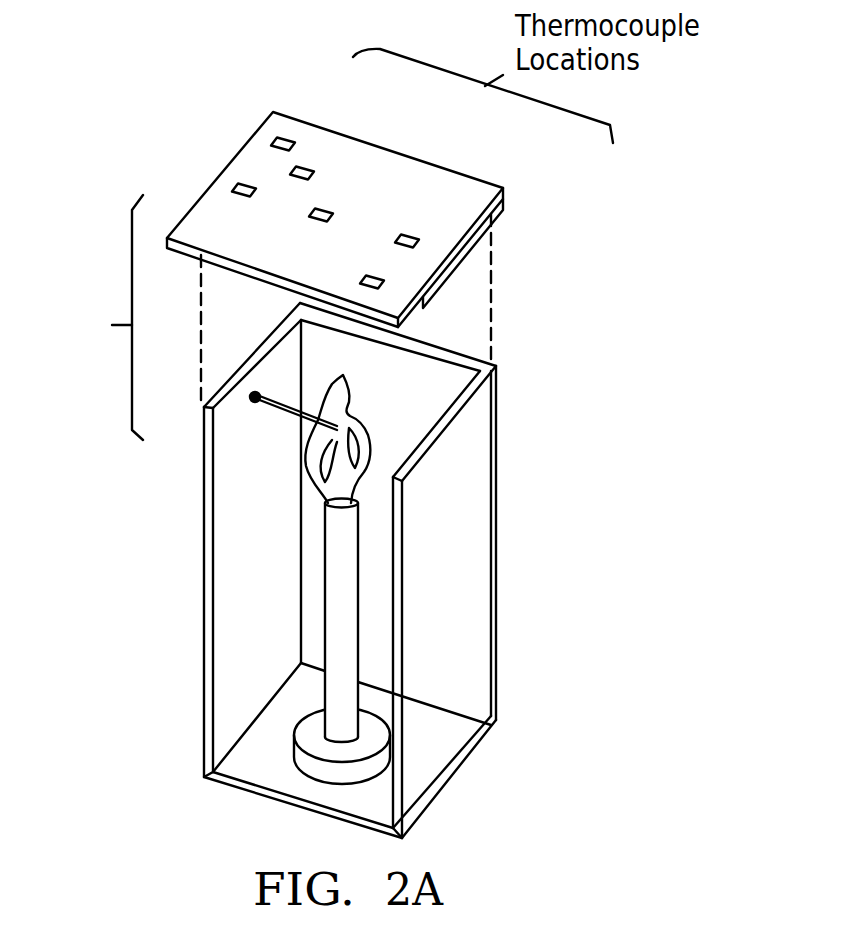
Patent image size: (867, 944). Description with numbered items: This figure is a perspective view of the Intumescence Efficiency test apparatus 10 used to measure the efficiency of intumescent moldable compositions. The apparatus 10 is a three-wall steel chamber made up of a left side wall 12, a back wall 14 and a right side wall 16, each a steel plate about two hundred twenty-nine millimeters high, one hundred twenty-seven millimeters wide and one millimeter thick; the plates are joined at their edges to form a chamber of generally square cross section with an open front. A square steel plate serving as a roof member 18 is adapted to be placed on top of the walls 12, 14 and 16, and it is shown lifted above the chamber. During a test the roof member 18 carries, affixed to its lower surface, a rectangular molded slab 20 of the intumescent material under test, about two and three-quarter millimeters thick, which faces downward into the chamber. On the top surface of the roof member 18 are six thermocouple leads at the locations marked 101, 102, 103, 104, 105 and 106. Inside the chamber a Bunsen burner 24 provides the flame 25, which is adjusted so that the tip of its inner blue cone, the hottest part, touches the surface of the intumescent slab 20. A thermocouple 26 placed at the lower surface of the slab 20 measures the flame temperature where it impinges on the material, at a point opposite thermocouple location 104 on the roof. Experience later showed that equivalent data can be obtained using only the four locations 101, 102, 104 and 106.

The apparatus 10 is at (536, 367).
The left side wall 12 is at (203, 522).
The back wall 14 is at (438, 383).
The right side wall 16 is at (470, 535).
The roof member 18 is at (213, 220).
The molded slab 20 is at (478, 242).
The Bunsen burner 24 is at (333, 608).
The flame 25 is at (333, 397).
The thermocouple 26 is at (340, 428).
The thermocouple location 101 is at (292, 139).
The thermocouple location 102 is at (311, 168).
The thermocouple location 103 is at (240, 184).
The thermocouple location 104 is at (330, 210).
The thermocouple location 105 is at (412, 237).
The thermocouple location 106 is at (375, 276).